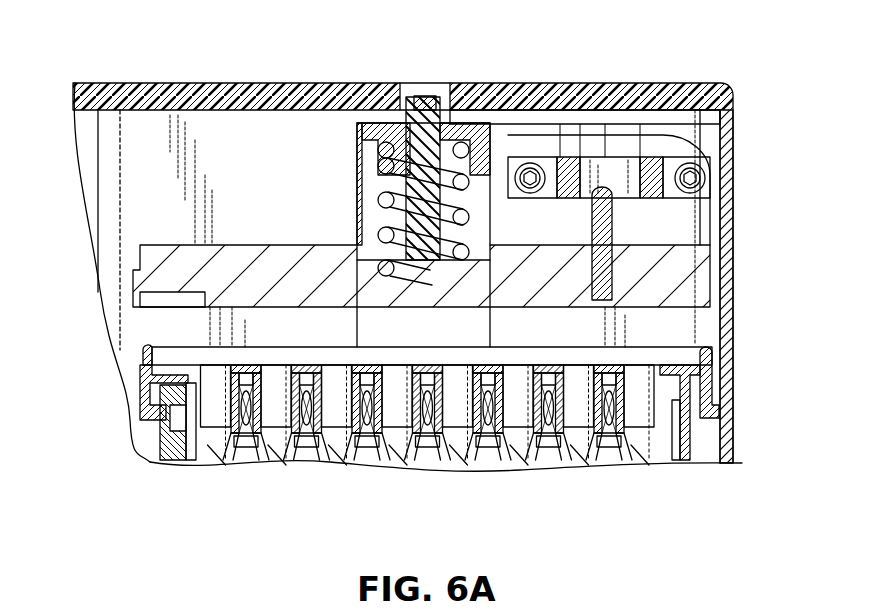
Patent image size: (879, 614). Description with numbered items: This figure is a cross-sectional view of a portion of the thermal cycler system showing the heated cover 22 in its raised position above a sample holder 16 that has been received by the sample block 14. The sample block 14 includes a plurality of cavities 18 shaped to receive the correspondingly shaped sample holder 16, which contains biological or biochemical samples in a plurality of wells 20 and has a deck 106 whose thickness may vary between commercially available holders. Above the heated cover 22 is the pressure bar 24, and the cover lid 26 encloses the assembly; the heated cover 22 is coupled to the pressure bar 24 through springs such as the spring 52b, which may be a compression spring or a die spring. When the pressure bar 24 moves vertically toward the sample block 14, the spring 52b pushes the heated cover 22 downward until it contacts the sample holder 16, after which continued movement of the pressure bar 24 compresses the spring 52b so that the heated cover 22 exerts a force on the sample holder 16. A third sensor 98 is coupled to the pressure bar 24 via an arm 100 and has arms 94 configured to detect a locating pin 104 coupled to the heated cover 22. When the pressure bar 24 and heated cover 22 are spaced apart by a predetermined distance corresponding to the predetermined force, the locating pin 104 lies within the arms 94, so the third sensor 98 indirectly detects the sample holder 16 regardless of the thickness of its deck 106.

The sample block 14 is at (186, 450).
The sample holder 16 is at (142, 362).
The cavities 18 is at (212, 458).
The wells 20 is at (280, 452).
The heated cover 22 is at (150, 280).
The pressure bar 24 is at (378, 124).
The cover lid 26 is at (157, 82).
The spring 52b is at (378, 198).
The arms 94 is at (568, 160).
The third sensor 98 is at (549, 158).
The arm 100 is at (625, 110).
The locating pin 104 is at (607, 220).
The deck 106 is at (700, 352).